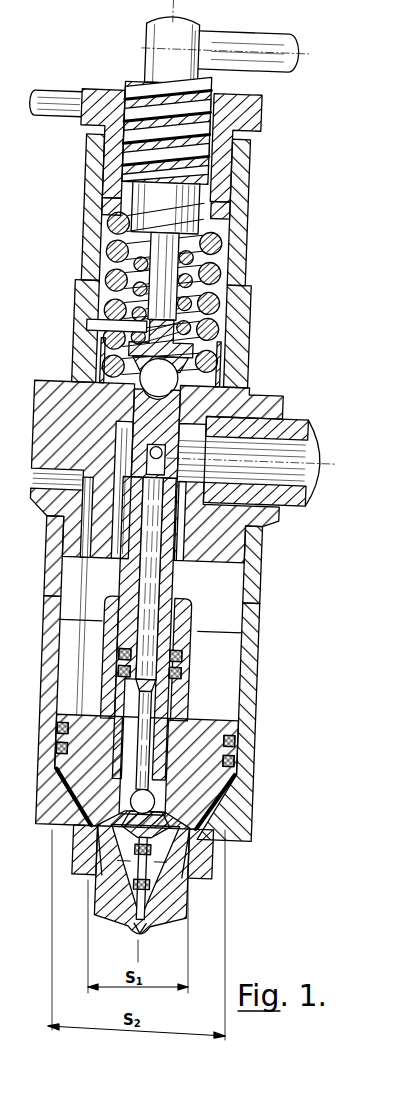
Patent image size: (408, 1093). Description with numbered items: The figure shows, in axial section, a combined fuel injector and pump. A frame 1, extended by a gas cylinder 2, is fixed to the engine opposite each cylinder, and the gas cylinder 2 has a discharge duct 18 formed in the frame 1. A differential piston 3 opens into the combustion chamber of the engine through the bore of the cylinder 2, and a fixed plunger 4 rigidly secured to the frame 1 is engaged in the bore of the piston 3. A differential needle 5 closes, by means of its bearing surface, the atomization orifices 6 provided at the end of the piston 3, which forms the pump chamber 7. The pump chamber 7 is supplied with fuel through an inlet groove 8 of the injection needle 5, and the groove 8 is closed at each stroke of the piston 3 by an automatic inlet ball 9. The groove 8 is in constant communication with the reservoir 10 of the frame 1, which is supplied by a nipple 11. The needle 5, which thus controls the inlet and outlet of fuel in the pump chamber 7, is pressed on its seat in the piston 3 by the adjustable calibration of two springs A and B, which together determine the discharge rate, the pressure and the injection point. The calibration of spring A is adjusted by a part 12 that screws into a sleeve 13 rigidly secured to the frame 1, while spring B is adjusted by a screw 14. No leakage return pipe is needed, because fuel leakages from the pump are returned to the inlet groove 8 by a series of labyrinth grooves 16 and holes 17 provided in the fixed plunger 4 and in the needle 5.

The frame 1 is at (255, 517).
The gas cylinder 2 is at (243, 733).
The differential piston 3 is at (202, 775).
The fixed plunger 4 is at (252, 580).
The differential needle 5 is at (147, 900).
The atomization orifices 6 is at (153, 928).
The pump chamber 7 is at (172, 861).
The inlet groove 8 is at (157, 628).
The automatic inlet ball 9 is at (157, 808).
The reservoir 10 is at (230, 460).
The nipple 11 is at (282, 423).
The adjusting part 12 is at (222, 190).
The sleeve 13 is at (240, 372).
The screw 14 is at (220, 134).
The labyrinth grooves 16 is at (173, 697).
The holes 17 is at (173, 664).
The discharge duct 18 is at (85, 552).
The spring A is at (215, 296).
The spring B is at (232, 327).